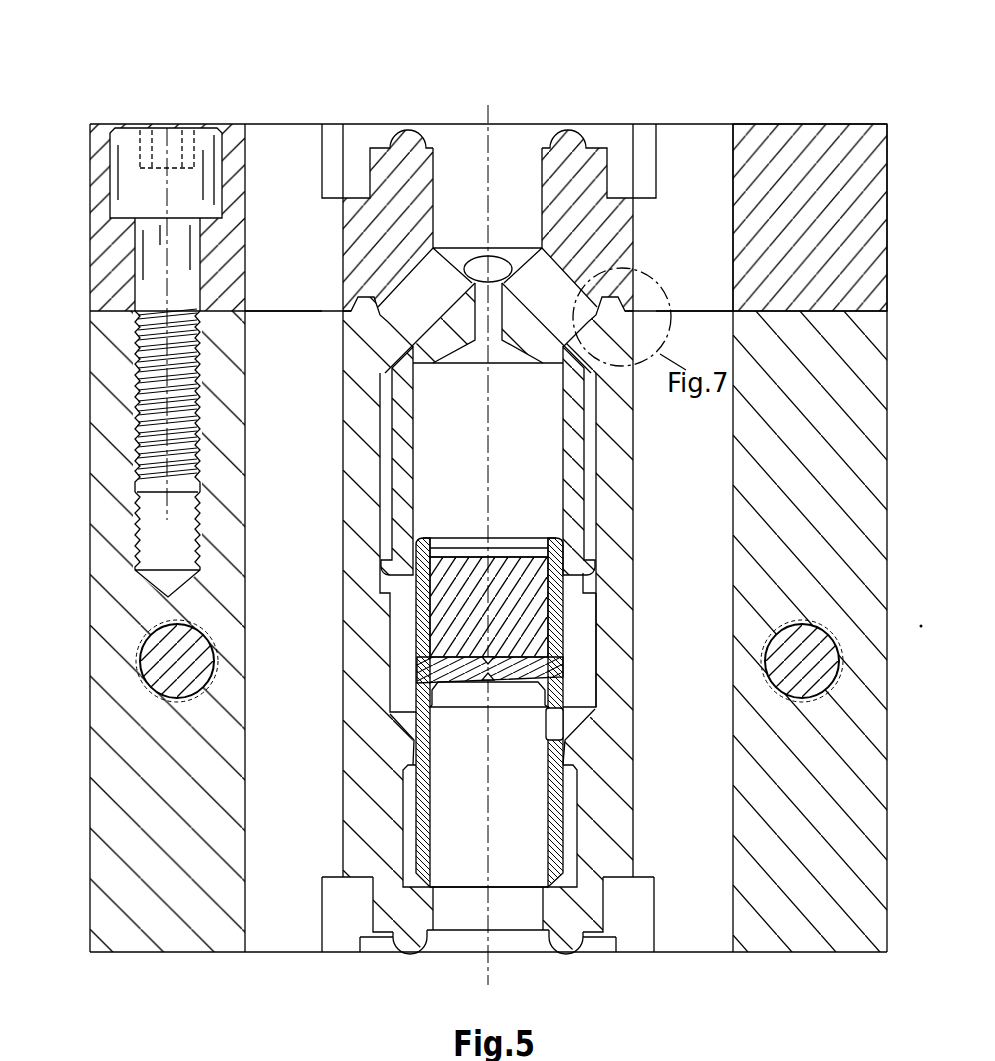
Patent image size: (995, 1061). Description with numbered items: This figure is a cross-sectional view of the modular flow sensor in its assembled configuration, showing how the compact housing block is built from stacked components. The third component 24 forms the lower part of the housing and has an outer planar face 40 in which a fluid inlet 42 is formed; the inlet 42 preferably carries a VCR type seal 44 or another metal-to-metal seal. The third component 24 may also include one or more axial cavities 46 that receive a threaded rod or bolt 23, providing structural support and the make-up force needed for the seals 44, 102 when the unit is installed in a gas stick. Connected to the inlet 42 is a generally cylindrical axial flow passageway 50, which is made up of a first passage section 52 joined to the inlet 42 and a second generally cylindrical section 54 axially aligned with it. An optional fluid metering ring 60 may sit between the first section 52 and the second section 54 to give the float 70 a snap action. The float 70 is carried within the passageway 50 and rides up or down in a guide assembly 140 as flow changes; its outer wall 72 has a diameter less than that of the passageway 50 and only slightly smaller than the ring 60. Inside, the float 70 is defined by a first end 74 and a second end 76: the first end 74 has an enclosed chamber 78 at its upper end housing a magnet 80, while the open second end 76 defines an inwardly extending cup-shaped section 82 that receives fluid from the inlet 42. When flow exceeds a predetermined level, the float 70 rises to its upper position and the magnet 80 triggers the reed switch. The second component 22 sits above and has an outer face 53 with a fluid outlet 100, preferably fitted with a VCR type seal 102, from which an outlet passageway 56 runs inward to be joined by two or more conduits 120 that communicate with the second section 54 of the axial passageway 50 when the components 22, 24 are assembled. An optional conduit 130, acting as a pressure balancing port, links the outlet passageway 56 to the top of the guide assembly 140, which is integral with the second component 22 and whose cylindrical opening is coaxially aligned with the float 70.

The fluid outlet 100 is at (472, 104).
The VCR type seal 102 is at (372, 124).
The second component 22 is at (88, 226).
The bolt 23 is at (163, 148).
The third component 24 is at (88, 606).
The outer planar face 40 is at (298, 952).
The fluid inlet 42 is at (470, 959).
The VCR type seal 44 is at (568, 952).
The axial cavities 46 is at (704, 701).
The axial flow passageway 50 is at (588, 629).
The first passage section 52 is at (570, 805).
The outer face 53 is at (790, 124).
The second generally cylindrical section 54 is at (598, 492).
The outlet passageway 56 is at (526, 218).
The fluid metering ring 60 is at (566, 741).
The float 70 is at (430, 680).
The outer wall 72 is at (410, 745).
The first end 74 is at (470, 540).
The second end 76 is at (556, 838).
The enclosed chamber 78 is at (512, 560).
The magnet 80 is at (478, 627).
The cup-shaped section 82 is at (526, 798).
The conduits 120 is at (433, 285).
The conduit 130 is at (493, 325).
The guide assembly 140 is at (390, 440).